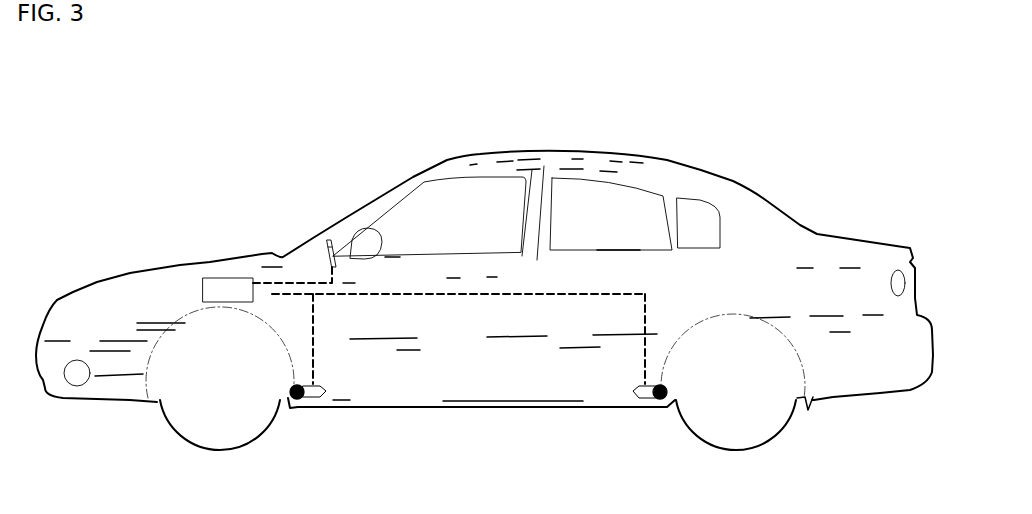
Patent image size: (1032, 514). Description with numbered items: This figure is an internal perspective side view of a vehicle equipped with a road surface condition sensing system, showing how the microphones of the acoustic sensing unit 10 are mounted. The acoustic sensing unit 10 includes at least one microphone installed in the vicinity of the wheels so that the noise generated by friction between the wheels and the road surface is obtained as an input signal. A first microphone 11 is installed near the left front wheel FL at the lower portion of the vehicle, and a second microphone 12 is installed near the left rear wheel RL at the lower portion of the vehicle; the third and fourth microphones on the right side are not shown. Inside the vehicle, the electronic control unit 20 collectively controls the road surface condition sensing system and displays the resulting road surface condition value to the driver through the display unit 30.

The acoustic sensing unit 10 is at (469, 389).
The first microphone 11 is at (317, 421).
The second microphone 12 is at (653, 441).
The electronic control unit 20 is at (222, 277).
The display unit 30 is at (327, 240).
The left front wheel FL is at (188, 470).
The left rear wheel RL is at (773, 466).